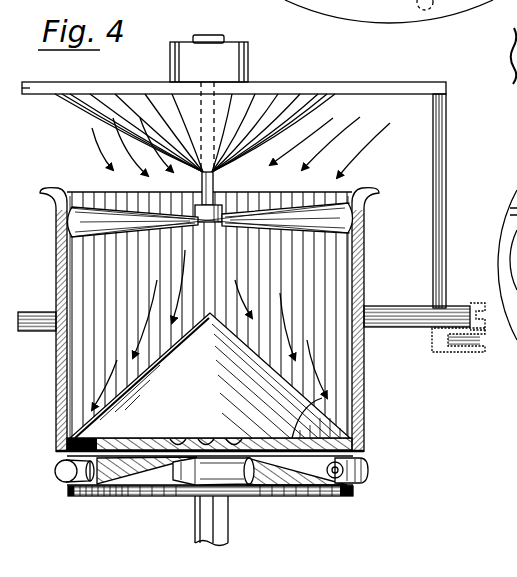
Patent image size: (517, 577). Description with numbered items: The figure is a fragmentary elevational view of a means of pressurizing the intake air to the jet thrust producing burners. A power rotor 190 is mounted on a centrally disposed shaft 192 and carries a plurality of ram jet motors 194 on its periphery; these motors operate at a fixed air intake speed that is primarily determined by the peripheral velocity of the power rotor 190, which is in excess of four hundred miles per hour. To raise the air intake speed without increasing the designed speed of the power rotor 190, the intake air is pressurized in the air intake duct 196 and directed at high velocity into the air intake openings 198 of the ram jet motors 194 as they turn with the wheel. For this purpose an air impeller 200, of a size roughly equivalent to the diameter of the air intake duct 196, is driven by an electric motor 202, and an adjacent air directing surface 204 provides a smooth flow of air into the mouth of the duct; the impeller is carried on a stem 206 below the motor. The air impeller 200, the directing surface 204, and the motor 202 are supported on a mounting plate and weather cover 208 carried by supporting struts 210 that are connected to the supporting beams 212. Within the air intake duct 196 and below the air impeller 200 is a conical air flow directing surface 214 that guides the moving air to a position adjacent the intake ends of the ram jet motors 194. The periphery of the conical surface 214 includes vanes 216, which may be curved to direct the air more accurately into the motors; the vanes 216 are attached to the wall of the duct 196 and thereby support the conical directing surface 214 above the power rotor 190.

The power rotor 190 is at (137, 497).
The shaft 192 is at (196, 510).
The ram jet motors 194 is at (83, 470).
The air intake duct 196 is at (362, 243).
The air intake openings 198 is at (340, 466).
The air impeller 200 is at (268, 222).
The electric motor 202 is at (250, 50).
The air directing surface 204 is at (335, 100).
The stem 206 is at (200, 192).
The mounting plate and weather cover 208 is at (332, 84).
The supporting struts 210 is at (447, 160).
The supporting beams 212 is at (463, 347).
The conical air flow directing surface 214 is at (236, 302).
The vanes 216 is at (235, 438).